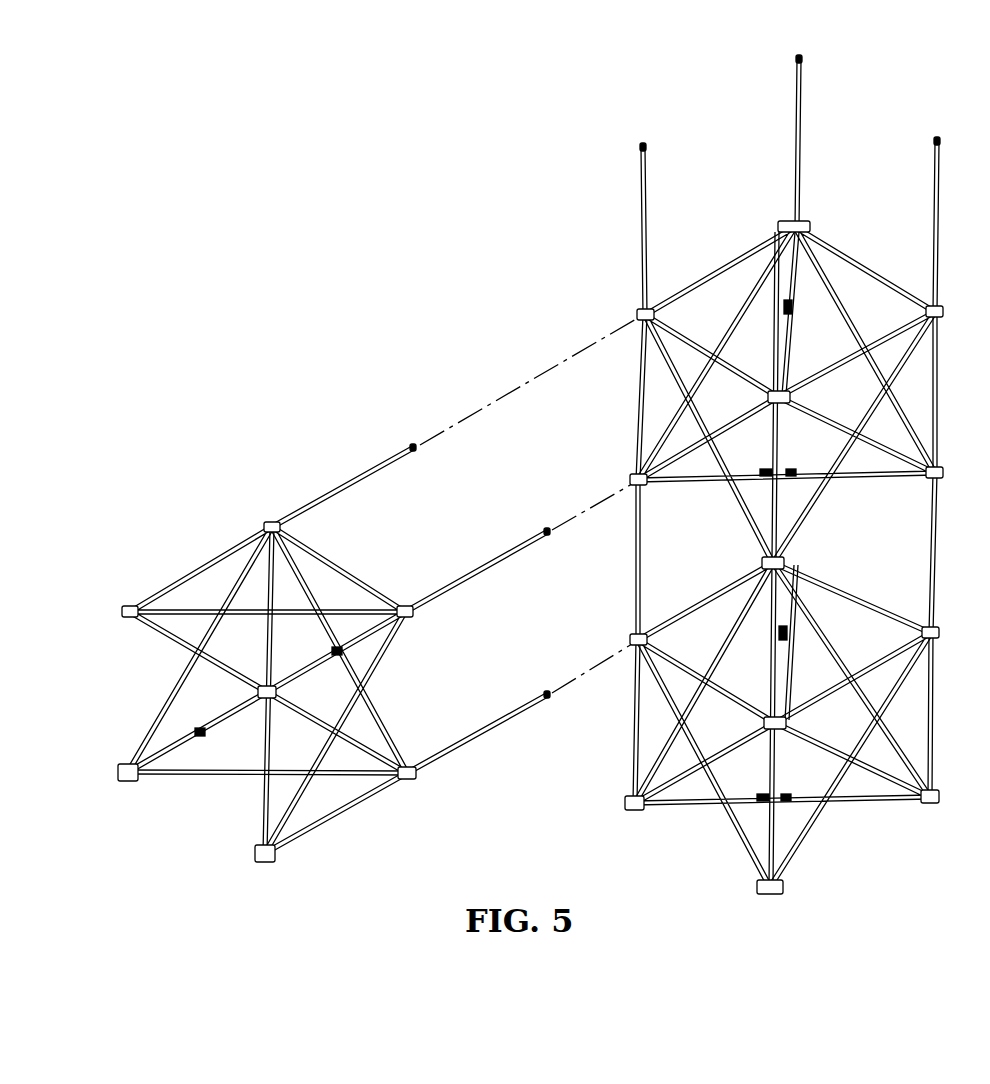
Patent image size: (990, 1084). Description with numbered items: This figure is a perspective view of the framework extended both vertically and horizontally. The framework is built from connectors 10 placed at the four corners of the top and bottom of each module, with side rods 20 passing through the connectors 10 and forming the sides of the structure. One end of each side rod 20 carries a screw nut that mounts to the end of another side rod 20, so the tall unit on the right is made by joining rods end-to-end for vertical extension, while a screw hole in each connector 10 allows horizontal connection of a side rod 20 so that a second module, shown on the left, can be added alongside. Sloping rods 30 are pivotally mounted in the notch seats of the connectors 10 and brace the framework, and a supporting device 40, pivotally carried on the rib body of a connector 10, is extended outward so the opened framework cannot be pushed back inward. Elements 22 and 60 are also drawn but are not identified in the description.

The connector 10 is at (262, 522).
The side rod 20 is at (352, 470).
The diagonal brace strut 22 is at (262, 783).
The sloping rod 30 is at (187, 786).
The supporting device 40 is at (322, 600).
The pole end cap 60 is at (412, 444).